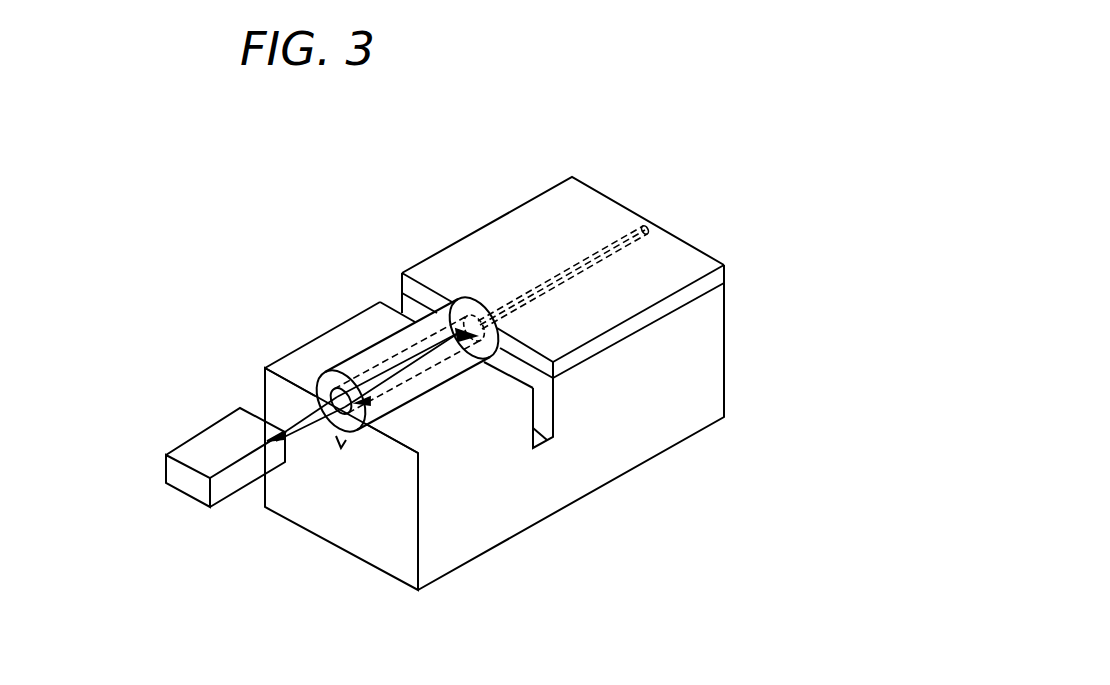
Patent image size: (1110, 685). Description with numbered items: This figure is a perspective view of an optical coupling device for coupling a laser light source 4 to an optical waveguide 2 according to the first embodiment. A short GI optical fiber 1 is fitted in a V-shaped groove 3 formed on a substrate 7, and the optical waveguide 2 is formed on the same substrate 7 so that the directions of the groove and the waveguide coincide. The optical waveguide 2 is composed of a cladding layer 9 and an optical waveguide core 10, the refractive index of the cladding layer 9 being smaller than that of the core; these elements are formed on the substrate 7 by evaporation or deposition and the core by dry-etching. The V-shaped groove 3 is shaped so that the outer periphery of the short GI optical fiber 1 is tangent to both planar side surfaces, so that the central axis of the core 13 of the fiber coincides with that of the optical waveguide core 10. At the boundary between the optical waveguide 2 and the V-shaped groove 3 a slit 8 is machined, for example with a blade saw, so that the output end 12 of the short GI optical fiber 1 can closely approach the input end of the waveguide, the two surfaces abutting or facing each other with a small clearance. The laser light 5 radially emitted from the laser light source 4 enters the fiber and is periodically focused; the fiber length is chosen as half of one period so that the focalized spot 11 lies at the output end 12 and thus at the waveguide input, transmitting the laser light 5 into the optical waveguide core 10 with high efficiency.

The short GI optical fiber 1 is at (385, 410).
The optical waveguide 2 is at (504, 104).
The V-shaped groove 3 is at (342, 445).
The laser light source 4 is at (203, 452).
The laser light 5 is at (300, 422).
The substrate 7 is at (628, 448).
The slit 8 is at (540, 440).
The cladding layer 9 is at (693, 262).
The optical waveguide core 10 is at (633, 237).
The focalized spot 11 is at (460, 332).
The output end 12 is at (498, 328).
The core 13 is at (443, 332).